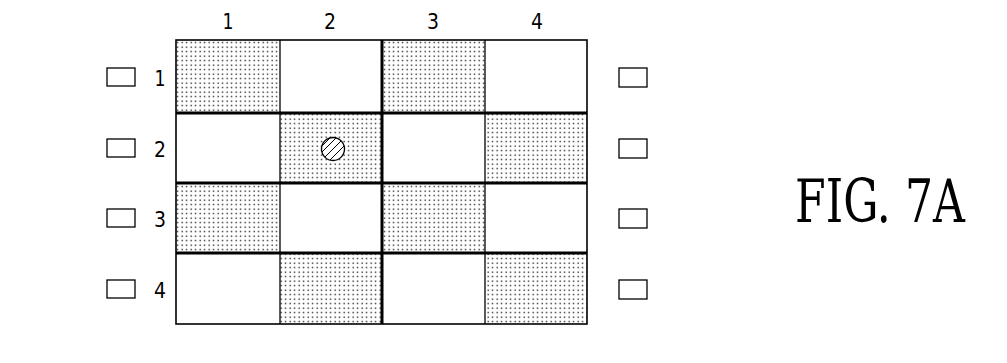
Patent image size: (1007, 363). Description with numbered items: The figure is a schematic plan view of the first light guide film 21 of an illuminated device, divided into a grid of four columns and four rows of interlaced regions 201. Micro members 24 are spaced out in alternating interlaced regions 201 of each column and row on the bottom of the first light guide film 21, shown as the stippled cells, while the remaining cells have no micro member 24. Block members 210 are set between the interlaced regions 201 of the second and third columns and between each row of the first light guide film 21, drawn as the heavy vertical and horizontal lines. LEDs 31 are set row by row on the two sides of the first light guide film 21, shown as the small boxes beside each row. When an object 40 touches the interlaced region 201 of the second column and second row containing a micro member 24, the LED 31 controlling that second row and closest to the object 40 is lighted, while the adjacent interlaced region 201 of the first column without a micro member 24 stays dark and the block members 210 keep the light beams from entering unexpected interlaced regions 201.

The first light guide film 21 is at (587, 40).
The interlaced region 201 is at (176, 42).
The block member 210 is at (578, 114).
The micro member 24 is at (176, 186).
The LED 31 is at (645, 76).
The object 40 is at (323, 143).